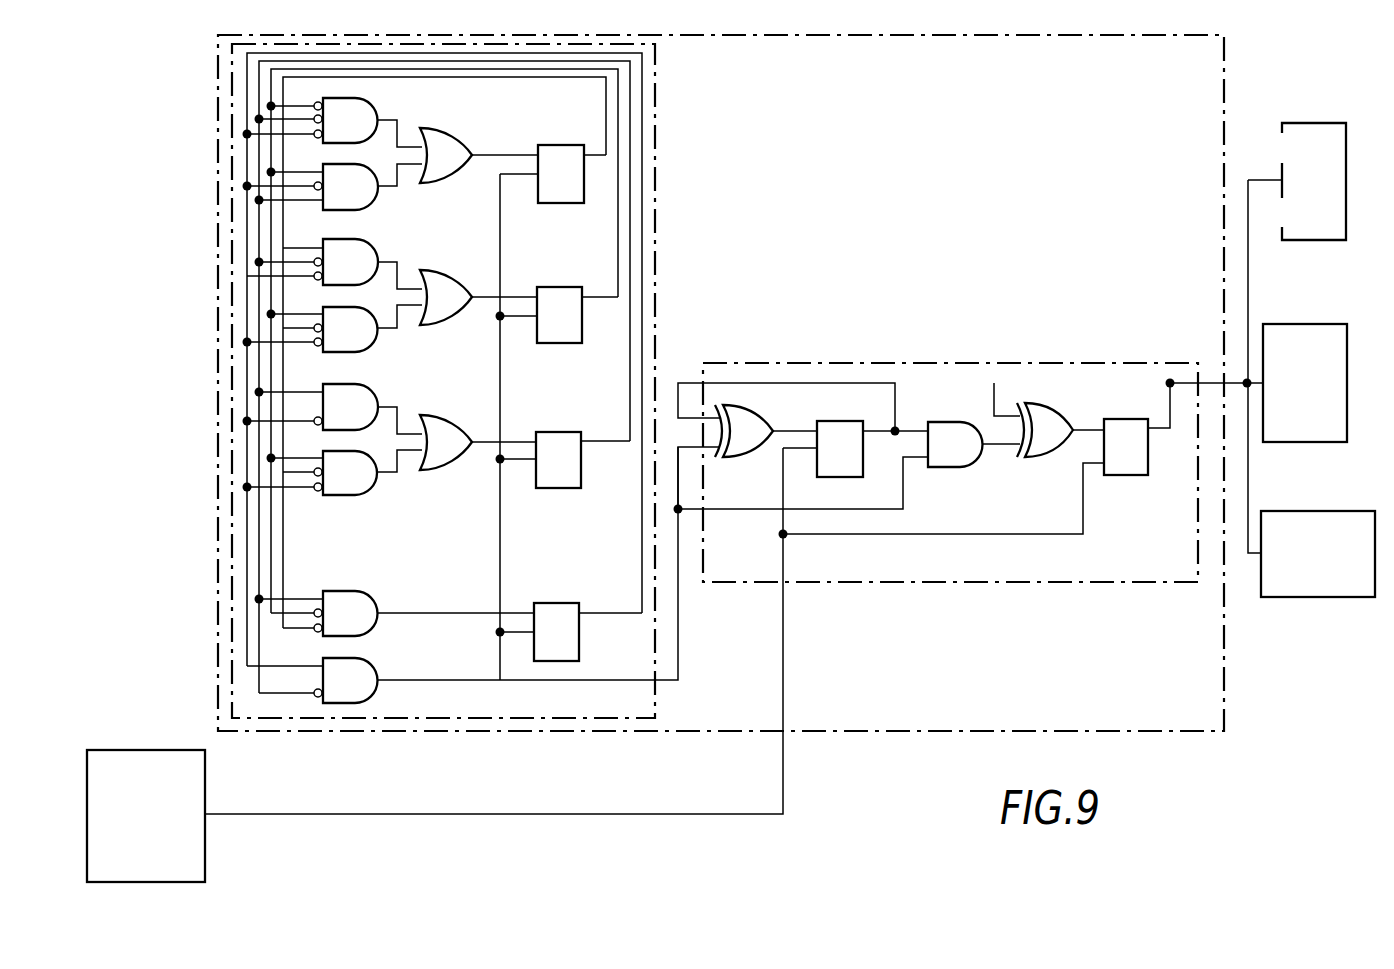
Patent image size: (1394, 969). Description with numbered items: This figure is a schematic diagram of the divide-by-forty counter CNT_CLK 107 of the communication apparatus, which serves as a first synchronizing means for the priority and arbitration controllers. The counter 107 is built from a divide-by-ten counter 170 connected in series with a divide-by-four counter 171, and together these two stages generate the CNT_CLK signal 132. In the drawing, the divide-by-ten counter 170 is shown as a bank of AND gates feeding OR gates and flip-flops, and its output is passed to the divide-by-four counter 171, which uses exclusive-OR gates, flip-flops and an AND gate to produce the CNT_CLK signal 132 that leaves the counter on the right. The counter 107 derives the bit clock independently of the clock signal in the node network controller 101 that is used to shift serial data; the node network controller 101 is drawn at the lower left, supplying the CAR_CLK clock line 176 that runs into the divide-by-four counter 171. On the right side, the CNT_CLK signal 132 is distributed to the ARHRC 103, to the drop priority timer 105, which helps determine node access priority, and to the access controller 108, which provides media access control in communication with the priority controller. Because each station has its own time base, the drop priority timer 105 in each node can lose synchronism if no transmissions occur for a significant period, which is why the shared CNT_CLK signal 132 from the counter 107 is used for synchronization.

The node network controller 101 is at (205, 846).
The ARHRC 103 is at (1298, 123).
The drop priority timer 105 is at (1290, 324).
The divide-by-40 counter CNT_CLK 107 is at (1150, 731).
The access controller 108 is at (1333, 597).
The CNT_CLK signal 132 is at (1248, 468).
The divide-by-10 counter 170 is at (657, 190).
The divide-by-4 counter 171 is at (822, 362).
The CAR_CLK clock line 176 is at (650, 815).